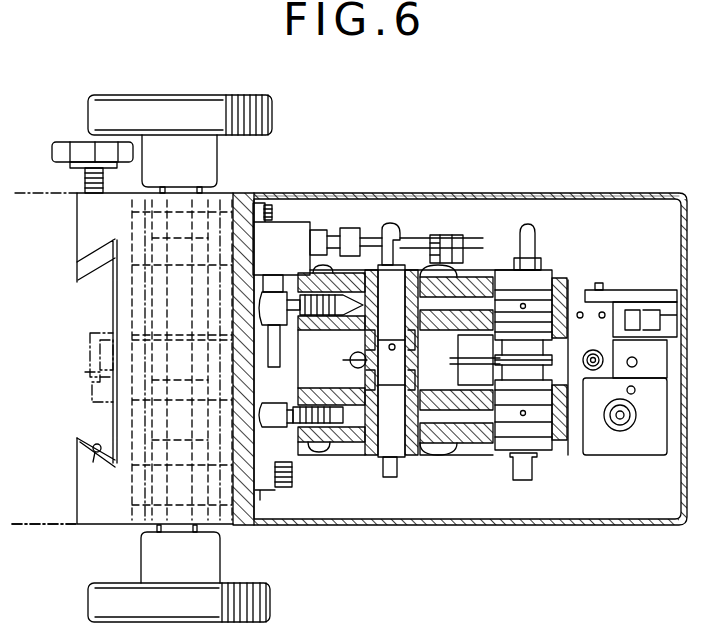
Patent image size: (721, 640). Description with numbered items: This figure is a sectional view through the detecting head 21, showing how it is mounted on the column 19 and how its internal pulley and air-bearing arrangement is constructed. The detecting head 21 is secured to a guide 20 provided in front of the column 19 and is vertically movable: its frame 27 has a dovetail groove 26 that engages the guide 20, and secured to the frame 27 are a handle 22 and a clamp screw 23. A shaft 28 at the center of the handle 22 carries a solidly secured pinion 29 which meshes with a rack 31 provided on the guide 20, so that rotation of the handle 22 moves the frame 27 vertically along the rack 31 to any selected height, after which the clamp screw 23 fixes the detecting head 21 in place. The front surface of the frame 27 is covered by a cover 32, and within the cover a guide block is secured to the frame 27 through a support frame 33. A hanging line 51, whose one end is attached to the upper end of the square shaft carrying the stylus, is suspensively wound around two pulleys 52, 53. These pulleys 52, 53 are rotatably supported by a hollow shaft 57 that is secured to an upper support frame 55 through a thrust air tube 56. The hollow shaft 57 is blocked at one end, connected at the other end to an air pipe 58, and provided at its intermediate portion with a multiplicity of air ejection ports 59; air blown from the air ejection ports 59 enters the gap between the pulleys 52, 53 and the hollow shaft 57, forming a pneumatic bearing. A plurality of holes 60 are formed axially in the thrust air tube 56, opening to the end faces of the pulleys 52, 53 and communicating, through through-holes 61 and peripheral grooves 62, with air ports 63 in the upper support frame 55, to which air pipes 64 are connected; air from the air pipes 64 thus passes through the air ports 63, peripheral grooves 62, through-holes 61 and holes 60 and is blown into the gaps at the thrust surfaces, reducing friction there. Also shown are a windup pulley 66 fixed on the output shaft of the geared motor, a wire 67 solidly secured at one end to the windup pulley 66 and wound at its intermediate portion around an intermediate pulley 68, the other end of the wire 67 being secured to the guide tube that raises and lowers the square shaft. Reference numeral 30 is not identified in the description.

The column 19 is at (68, 526).
The guide 20 is at (113, 417).
The detecting head 21 is at (447, 190).
The handle 22 is at (160, 95).
The clamp screw 23 is at (80, 142).
The dovetail groove 26 is at (96, 462).
The frame 27 is at (82, 218).
The shaft 28 is at (200, 318).
The pinion 29 is at (152, 335).
The plate 30 is at (143, 335).
The rack 31 is at (95, 320).
The cover 32 is at (358, 193).
The support frame 33 is at (264, 476).
The hanging line 51 is at (448, 355).
The pulley 52 is at (355, 362).
The pulley 53 is at (540, 350).
The upper support frame 55 is at (486, 455).
The thrust air tube 56 is at (412, 455).
The hollow shaft 57 is at (392, 478).
The air pipe 58 is at (395, 240).
The air ejection ports 59 is at (395, 347).
The holes 60 is at (440, 285).
The through-holes 61 is at (357, 330).
The peripheral grooves 62 is at (302, 262).
The air ports 63 is at (340, 452).
The air pipes 64 is at (256, 398).
The windup pulley 66 is at (630, 425).
The wire 67 is at (640, 352).
The intermediate pulley 68 is at (622, 300).